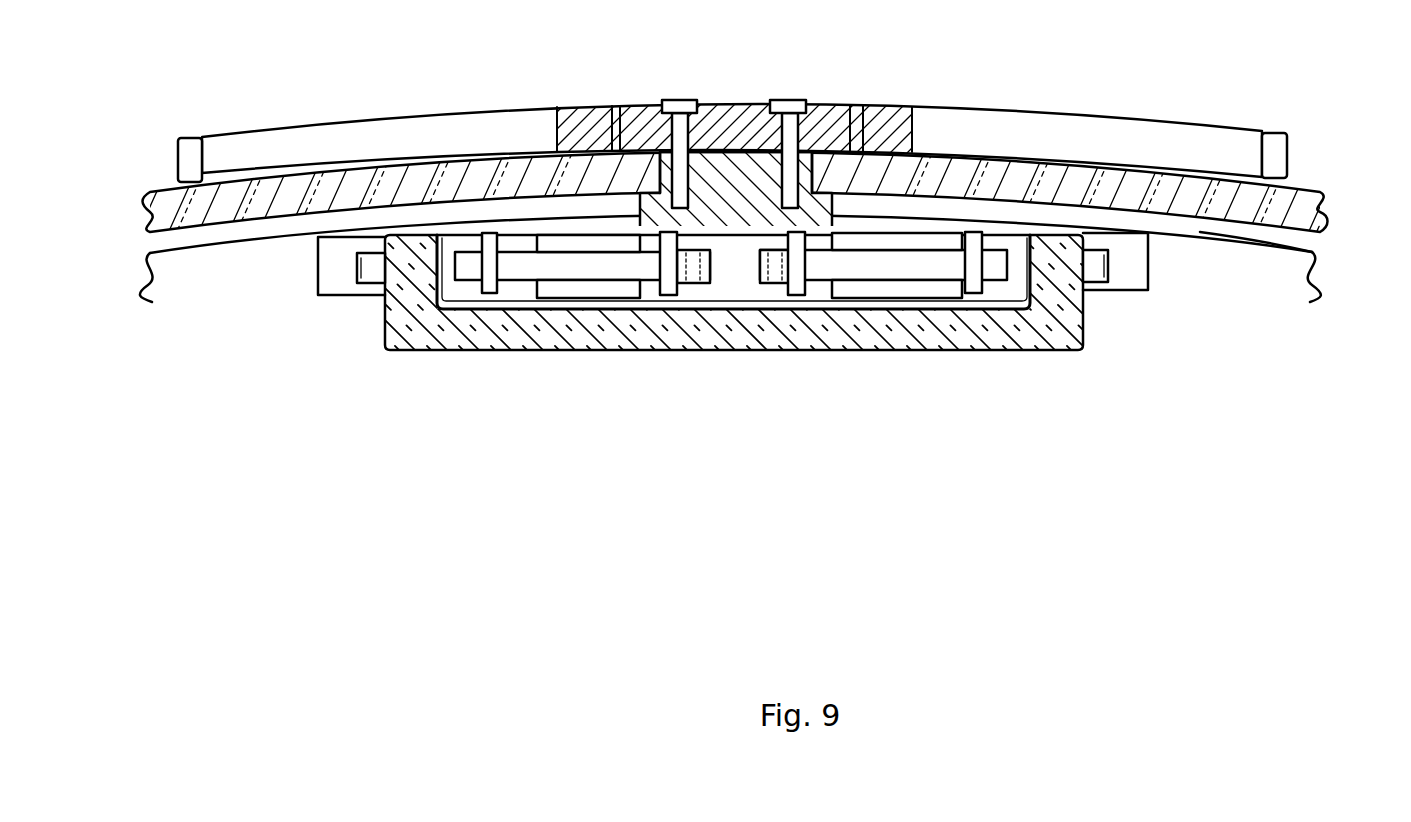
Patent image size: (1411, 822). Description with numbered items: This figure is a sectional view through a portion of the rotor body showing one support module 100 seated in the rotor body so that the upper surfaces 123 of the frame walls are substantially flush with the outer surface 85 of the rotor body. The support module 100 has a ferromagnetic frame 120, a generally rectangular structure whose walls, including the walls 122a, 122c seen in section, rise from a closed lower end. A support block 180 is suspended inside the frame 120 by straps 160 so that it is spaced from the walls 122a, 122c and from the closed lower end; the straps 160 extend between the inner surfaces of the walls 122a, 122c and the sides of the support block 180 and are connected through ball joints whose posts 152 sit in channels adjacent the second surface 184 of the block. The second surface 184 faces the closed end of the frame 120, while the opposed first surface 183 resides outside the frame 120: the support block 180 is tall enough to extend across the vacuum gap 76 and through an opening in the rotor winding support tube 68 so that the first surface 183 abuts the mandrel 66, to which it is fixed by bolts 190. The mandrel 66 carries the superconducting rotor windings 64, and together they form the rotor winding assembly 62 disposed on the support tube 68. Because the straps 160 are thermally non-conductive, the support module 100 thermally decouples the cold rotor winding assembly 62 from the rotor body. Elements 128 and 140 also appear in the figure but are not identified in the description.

The rotor winding assembly 62 is at (591, 96).
The rotor windings 64 is at (732, 106).
The mandrel 66 is at (833, 107).
The rotor winding support tube 68 is at (350, 185).
The vacuum gap 76 is at (173, 237).
The outer surface of the rotor body 85 is at (1283, 247).
The support module 100 is at (1143, 361).
The frame 120 is at (933, 343).
The wall 122a is at (1073, 300).
The wall 122c is at (385, 318).
The upper surfaces of the frame walls 123 is at (1057, 226).
The fastener 128 is at (370, 267).
The channel liner 140 is at (435, 310).
The post 152 is at (497, 300).
The straps 160 is at (890, 262).
The support block 180 is at (737, 220).
The first surface 183 is at (727, 150).
The second surface 184 is at (766, 290).
The bolts 190 is at (681, 100).